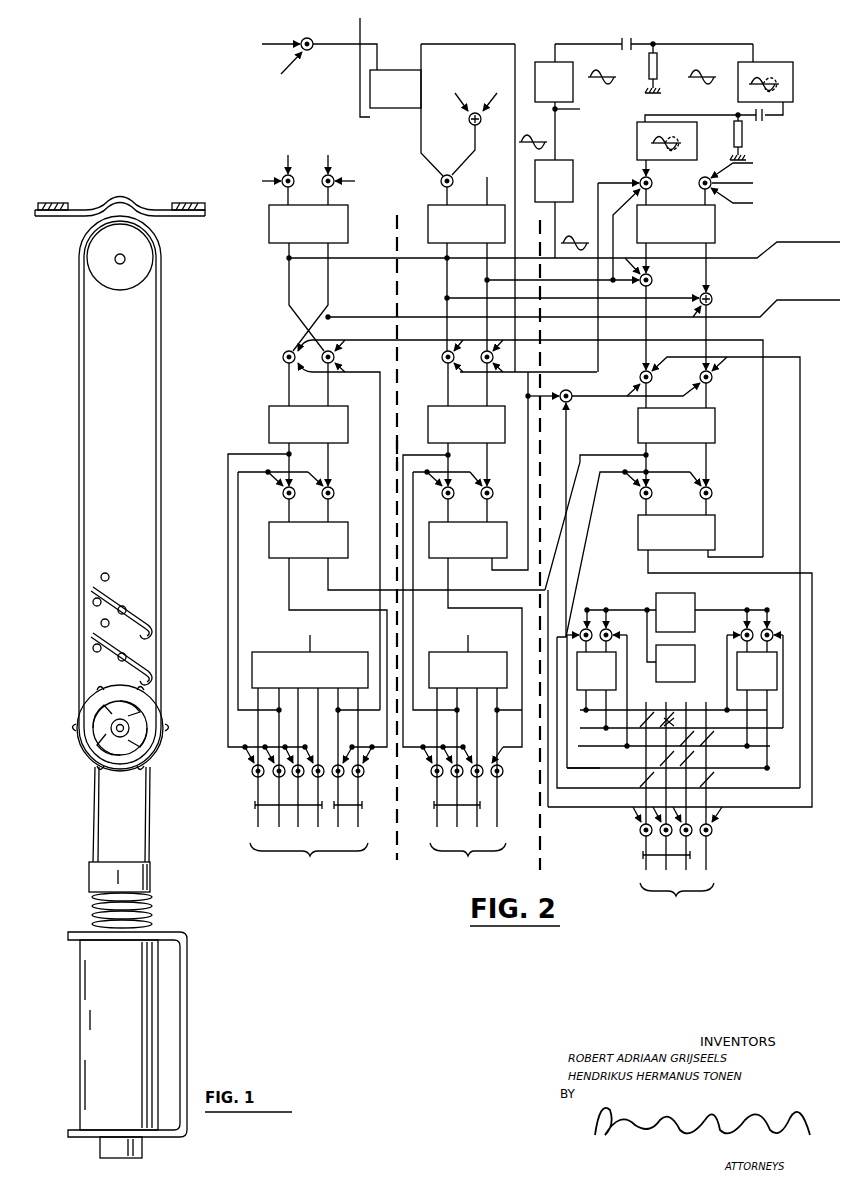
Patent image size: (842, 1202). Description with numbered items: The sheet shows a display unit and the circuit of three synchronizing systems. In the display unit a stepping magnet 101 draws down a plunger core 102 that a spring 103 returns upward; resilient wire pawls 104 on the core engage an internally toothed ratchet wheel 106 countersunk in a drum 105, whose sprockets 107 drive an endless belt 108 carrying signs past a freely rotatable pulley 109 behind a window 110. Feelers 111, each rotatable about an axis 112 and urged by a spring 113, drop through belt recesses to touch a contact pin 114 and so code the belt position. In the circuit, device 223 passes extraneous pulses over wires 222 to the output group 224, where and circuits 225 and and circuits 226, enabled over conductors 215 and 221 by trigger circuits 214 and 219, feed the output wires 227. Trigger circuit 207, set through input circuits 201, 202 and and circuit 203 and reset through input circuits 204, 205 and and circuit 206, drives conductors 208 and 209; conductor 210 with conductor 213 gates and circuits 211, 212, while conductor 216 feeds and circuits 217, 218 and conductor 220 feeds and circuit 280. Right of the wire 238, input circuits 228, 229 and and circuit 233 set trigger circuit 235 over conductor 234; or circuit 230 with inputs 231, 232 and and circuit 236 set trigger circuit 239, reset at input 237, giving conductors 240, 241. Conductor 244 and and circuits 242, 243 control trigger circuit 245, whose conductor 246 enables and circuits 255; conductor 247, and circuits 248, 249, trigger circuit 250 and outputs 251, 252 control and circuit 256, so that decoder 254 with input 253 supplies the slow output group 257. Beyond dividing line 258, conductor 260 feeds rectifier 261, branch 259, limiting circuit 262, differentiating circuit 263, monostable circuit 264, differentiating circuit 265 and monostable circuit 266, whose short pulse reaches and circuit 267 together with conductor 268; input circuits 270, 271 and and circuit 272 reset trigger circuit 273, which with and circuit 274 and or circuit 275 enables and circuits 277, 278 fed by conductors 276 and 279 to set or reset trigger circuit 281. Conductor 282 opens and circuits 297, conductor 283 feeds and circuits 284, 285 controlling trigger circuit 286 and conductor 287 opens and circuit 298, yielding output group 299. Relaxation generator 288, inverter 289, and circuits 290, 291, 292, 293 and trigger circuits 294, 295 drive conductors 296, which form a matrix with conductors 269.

In FIG. 1, the stepping magnet 101 is at (130, 1042).
In FIG. 1, the plunger core 102 is at (150, 920).
In FIG. 1, the spring 103 is at (148, 902).
In FIG. 1, the resilient wire pawls 104 is at (120, 822).
In FIG. 1, the drum 105 is at (143, 703).
In FIG. 1, the ratchet wheel with internal teeth 106 is at (133, 747).
In FIG. 1, the sprockets 107 is at (164, 728).
In FIG. 1, the endless belt 108 is at (162, 372).
In FIG. 1, the freely rotatable pulley 109 is at (132, 272).
In FIG. 1, the window 110 is at (145, 203).
In FIG. 1, the feelers 111 is at (153, 635).
In FIG. 1, the axis 112 is at (140, 610).
In FIG. 1, the spring 113 is at (110, 588).
In FIG. 1, the contact pin 114 is at (95, 608).
In FIG. 2, the input circuit 201 is at (287, 156).
In FIG. 2, the input circuit 202 is at (253, 182).
In FIG. 2, the and circuit 203 is at (278, 190).
In FIG. 2, the input circuit 204 is at (330, 156).
In FIG. 2, the input circuit 205 is at (360, 173).
In FIG. 2, the and circuit 206 is at (340, 190).
In FIG. 2, the trigger circuit 207 is at (308, 278).
In FIG. 2, the conductor 208 is at (563, 258).
In FIG. 2, the conductor 209 is at (583, 309).
In FIG. 2, the conductor 210 is at (530, 440).
In FIG. 2, the and circuit 211 is at (277, 378).
In FIG. 2, the and circuit 212 is at (342, 378).
In FIG. 2, the conductor 213 is at (339, 537).
In FIG. 2, the trigger circuit 214 is at (308, 446).
In FIG. 2, the conductor 215 is at (267, 592).
In FIG. 2, the conductor 216 is at (280, 591).
In FIG. 2, the and circuit 217 is at (276, 504).
In FIG. 2, the and circuit 218 is at (341, 504).
In FIG. 2, the trigger circuit 219 is at (308, 540).
In FIG. 2, the conductor 220 is at (436, 574).
In FIG. 2, the conductor 221 is at (321, 653).
In FIG. 2, the wires 222 is at (324, 643).
In FIG. 2, the device 223 is at (310, 739).
In FIG. 2, the group of output circuits 224 is at (308, 728).
In FIG. 2, the and circuits 225 is at (273, 791).
In FIG. 2, the and circuits 226 is at (359, 789).
In FIG. 2, the output wires 227 is at (309, 850).
In FIG. 2, the input circuit 228 is at (273, 74).
In FIG. 2, the input circuit 229 is at (266, 44).
In FIG. 2, the or circuit 230 is at (455, 144).
In FIG. 2, the input circuit 231 is at (452, 89).
In FIG. 2, the input circuit 232 is at (492, 89).
In FIG. 2, the and circuit 233 is at (339, 49).
In FIG. 2, the conductor 234 is at (344, 69).
In FIG. 2, the trigger circuit 235 is at (442, 110).
In FIG. 2, the and circuit 236 is at (459, 190).
In FIG. 2, the input circuit 237 is at (495, 181).
In FIG. 2, the wire 238 is at (393, 530).
In FIG. 2, the trigger circuit 239 is at (466, 224).
In FIG. 2, the conductor 240 is at (572, 291).
In FIG. 2, the conductor 241 is at (562, 273).
In FIG. 2, the and circuit 242 is at (432, 324).
In FIG. 2, the and circuit 243 is at (501, 324).
In FIG. 2, the conductor 244 is at (521, 218).
In FIG. 2, the trigger circuit 245 is at (466, 446).
In FIG. 2, the conductor 246 is at (399, 446).
In FIG. 2, the conductor 247 is at (440, 608).
In FIG. 2, the and circuit 248 is at (441, 591).
In FIG. 2, the and circuit 249 is at (492, 497).
In FIG. 2, the trigger circuit 250 is at (468, 540).
In FIG. 2, the conductor 251 is at (507, 476).
In FIG. 2, the output circuit 252 is at (468, 660).
In FIG. 2, the input line 253 is at (482, 643).
In FIG. 2, the decoder 254 is at (468, 739).
In FIG. 2, the and circuits 255 is at (441, 792).
In FIG. 2, the and circuit 256 is at (508, 789).
In FIG. 2, the output group 257 is at (468, 850).
In FIG. 2, the dividing line 258 is at (530, 538).
In FIG. 2, the branch 259 is at (570, 113).
In FIG. 2, the conductor 260 is at (575, 237).
In FIG. 2, the rectifier 261 is at (546, 196).
In FIG. 2, the limiting circuit 262 is at (575, 102).
In FIG. 2, the differentiating circuit 263 is at (654, 70).
In FIG. 2, the monostable trigger circuit 264 is at (719, 82).
In FIG. 2, the differentiating circuit 265 is at (750, 136).
In FIG. 2, the second monostable trigger circuit 266 is at (651, 149).
In FIG. 2, the and circuit 267 is at (639, 274).
In FIG. 2, the conductor 268 is at (625, 234).
In FIG. 2, the conductors 269 is at (675, 756).
In FIG. 2, the input circuit 270 is at (757, 166).
In FIG. 2, the input circuit 271 is at (757, 202).
In FIG. 2, the and circuit 272 is at (742, 190).
In FIG. 2, the trigger circuit 273 is at (676, 248).
In FIG. 2, the and circuit 274 is at (660, 321).
In FIG. 2, the or circuit 275 is at (720, 330).
In FIG. 2, the conductor 276 is at (678, 564).
In FIG. 2, the and circuit 277 is at (627, 388).
In FIG. 2, the and circuit 278 is at (719, 389).
In FIG. 2, the conductor 279 is at (636, 399).
In FIG. 2, the and circuit 280 is at (563, 506).
In FIG. 2, the trigger circuit 281 is at (676, 447).
In FIG. 2, the conductor 282 is at (596, 623).
In FIG. 2, the conductor 283 is at (629, 546).
In FIG. 2, the and circuit 284 is at (630, 501).
In FIG. 2, the and circuit 285 is at (720, 501).
In FIG. 2, the trigger circuit 286 is at (676, 532).
In FIG. 2, the conductor 287 is at (680, 686).
In FIG. 2, the relaxation generator 288 is at (671, 646).
In FIG. 2, the inverter 289 is at (677, 612).
In FIG. 2, the and circuit 290 is at (574, 689).
In FIG. 2, the and circuit 291 is at (617, 678).
In FIG. 2, the and circuit 292 is at (729, 660).
In FIG. 2, the and circuit 293 is at (778, 669).
In FIG. 2, the trigger circuit 294 is at (596, 690).
In FIG. 2, the trigger circuit 295 is at (757, 710).
In FIG. 2, the conductors 296 is at (596, 773).
In FIG. 2, the and circuits 297 is at (646, 853).
In FIG. 2, the and circuit 298 is at (719, 847).
In FIG. 2, the output group 299 is at (677, 890).